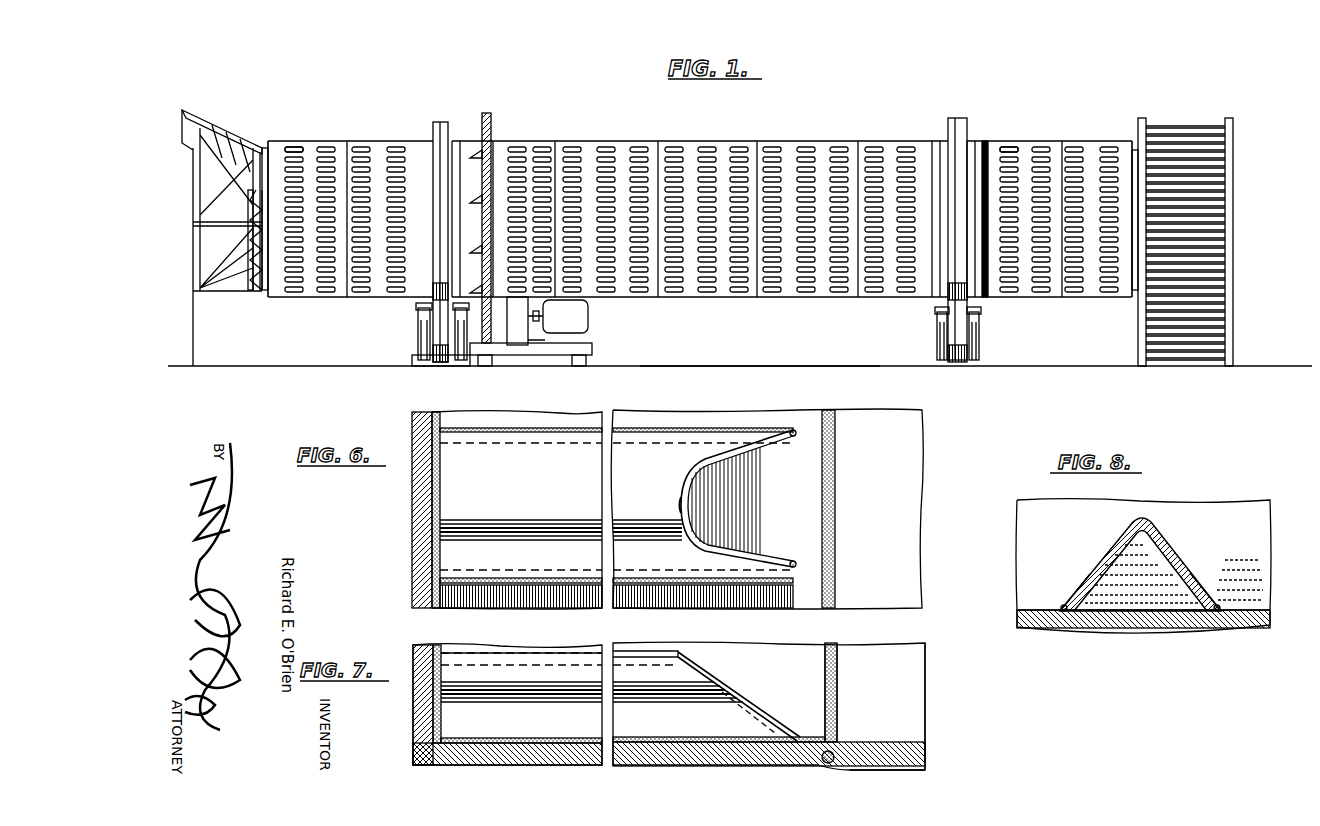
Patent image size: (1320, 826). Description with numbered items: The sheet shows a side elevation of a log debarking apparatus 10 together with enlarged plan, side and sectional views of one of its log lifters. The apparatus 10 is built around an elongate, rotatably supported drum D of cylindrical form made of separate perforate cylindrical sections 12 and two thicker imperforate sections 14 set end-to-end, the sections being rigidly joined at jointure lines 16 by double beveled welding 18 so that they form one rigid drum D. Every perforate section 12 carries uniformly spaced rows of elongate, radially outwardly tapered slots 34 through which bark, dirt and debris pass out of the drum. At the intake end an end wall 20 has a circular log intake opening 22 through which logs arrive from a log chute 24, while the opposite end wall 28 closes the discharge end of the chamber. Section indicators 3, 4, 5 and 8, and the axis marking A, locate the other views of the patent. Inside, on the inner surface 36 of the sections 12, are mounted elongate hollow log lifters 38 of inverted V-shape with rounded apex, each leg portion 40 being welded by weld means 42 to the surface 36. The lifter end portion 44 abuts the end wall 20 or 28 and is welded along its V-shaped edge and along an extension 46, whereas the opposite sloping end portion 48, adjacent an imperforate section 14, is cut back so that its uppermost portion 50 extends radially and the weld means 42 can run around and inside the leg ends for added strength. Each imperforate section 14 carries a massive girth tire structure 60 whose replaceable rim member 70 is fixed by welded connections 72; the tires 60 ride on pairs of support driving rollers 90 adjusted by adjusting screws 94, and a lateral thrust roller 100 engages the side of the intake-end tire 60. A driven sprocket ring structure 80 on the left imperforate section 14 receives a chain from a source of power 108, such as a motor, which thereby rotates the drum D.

In FIG. 1, the section line 3- 3 is at (292, 373).
In FIG. 1, the section line 4- 4 is at (1228, 372).
In FIG. 1, the section line 5- 5 is at (513, 200).
In FIG. 6, the section line 8- 8 is at (628, 615).
In FIG. 1, the drum axis plane A- A is at (858, 330).
In FIG. 1, the drum D is at (722, 297).
In FIG. 1, the apparatus 10 is at (633, 120).
In FIG. 1, the cylindrical sections 12 is at (318, 297).
In FIG. 7, the cylindrical sections 12 is at (672, 753).
In FIG. 8, the cylindrical sections 12 is at (1222, 626).
In FIG. 1, the imperforate cylindrical sections 14 is at (458, 141).
In FIG. 7, the imperforate cylindrical sections 14 is at (896, 760).
In FIG. 1, the jointure lines 16 is at (355, 147).
In FIG. 7, the double beveled welding 18 is at (826, 763).
In FIG. 1, the end wall 20 is at (270, 148).
In FIG. 6, the end wall 20 is at (418, 521).
In FIG. 7, the end wall 20 is at (424, 721).
In FIG. 1, the log intake opening 22 is at (213, 157).
In FIG. 1, the log chute 24 is at (183, 244).
In FIG. 1, the end wall 28 is at (1138, 135).
In FIG. 1, the slots 34 is at (296, 147).
In FIG. 7, the inner surface 36 is at (833, 742).
In FIG. 8, the inner surface 36 is at (1262, 596).
In FIG. 6, the log lifter 38 is at (512, 555).
In FIG. 7, the log lifter 38 is at (483, 672).
In FIG. 8, the log lifter 38 is at (1156, 520).
In FIG. 8, the leg portion 40 is at (1081, 578).
In FIG. 6, the weld means 42 is at (437, 508).
In FIG. 7, the weld means 42 is at (440, 705).
In FIG. 8, the weld means 42 is at (1219, 606).
In FIG. 6, the lifter end portion 44 is at (448, 478).
In FIG. 7, the lifter end portion 44 is at (452, 685).
In FIG. 6, the extension 46 is at (746, 450).
In FIG. 7, the extension 46 is at (761, 730).
In FIG. 6, the sloping end portion 48 is at (718, 496).
In FIG. 7, the sloping end portion 48 is at (738, 692).
In FIG. 6, the uppermost portion 50 is at (682, 507).
In FIG. 7, the uppermost portion 50 is at (678, 655).
In FIG. 1, the tire structure 60 is at (438, 118).
In FIG. 1, the tire rim member 70 is at (960, 237).
In FIG. 1, the welded connection 72 is at (957, 210).
In FIG. 1, the sprocket ring structure 80 is at (487, 113).
In FIG. 1, the support driving rollers 90 is at (443, 306).
In FIG. 1, the adjusting screws 94 is at (758, 366).
In FIG. 1, the lateral thrust roller 100 is at (443, 327).
In FIG. 1, the source of power 108 is at (571, 311).